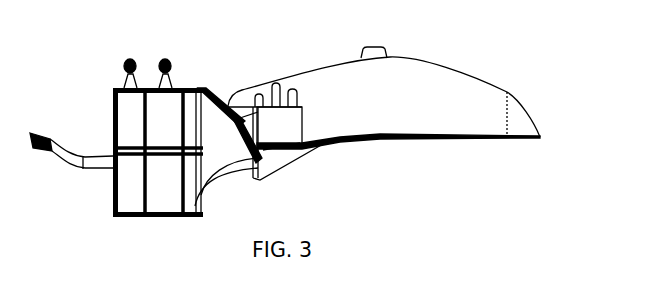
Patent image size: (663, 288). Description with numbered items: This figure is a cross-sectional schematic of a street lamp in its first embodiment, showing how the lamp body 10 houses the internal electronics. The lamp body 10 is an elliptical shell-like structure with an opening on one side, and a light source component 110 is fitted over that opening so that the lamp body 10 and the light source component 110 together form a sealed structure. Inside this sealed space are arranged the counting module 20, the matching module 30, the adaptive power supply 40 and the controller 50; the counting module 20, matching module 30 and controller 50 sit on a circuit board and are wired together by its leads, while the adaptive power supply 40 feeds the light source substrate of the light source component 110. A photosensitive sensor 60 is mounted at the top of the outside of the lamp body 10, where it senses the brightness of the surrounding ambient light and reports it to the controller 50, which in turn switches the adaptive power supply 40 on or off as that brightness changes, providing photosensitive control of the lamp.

The lamp body 10 is at (462, 71).
The light source component 110 is at (437, 142).
The counting module 20 is at (291, 90).
The matching module 30 is at (255, 86).
The adaptive power supply 40 is at (284, 148).
The controller 50 is at (273, 82).
The photosensitive sensor 60 is at (373, 48).